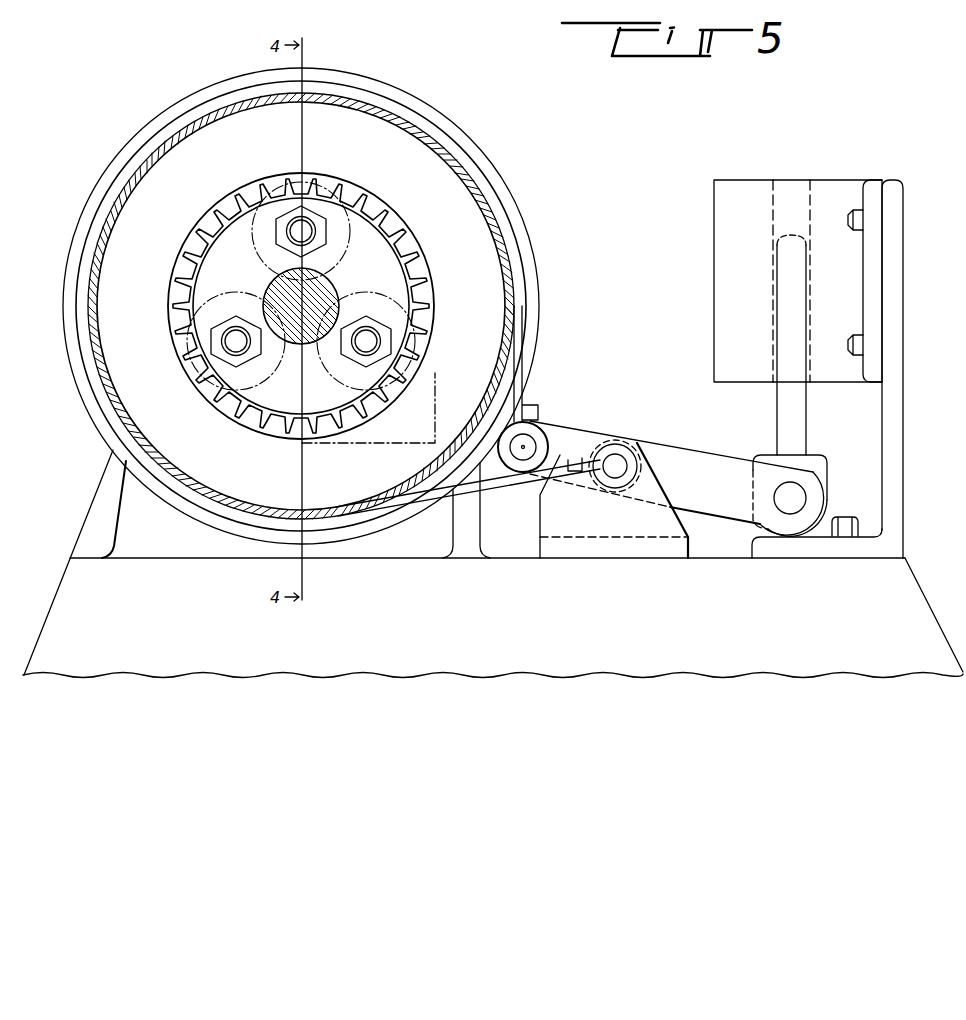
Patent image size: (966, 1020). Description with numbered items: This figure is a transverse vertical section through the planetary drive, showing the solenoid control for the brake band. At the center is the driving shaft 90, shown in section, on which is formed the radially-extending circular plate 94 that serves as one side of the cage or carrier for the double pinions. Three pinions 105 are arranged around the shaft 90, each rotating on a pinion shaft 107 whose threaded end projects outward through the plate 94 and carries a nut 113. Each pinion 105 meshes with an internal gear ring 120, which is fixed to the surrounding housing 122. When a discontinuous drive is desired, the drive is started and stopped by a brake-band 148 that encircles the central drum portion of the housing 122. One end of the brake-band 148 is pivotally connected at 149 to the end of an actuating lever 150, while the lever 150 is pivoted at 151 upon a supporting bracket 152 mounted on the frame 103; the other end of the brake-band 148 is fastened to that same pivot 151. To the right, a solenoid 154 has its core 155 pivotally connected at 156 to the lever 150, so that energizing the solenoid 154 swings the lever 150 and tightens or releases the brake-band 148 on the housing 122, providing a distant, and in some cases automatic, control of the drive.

The shaft 90 is at (340, 289).
The circular plate 94 is at (437, 279).
The frame 103 is at (465, 633).
The pinion 105 is at (305, 180).
The pinion shaft 107 is at (320, 222).
The nut 113 is at (306, 231).
The internal gear ring 120 is at (418, 244).
The housing 122 is at (448, 162).
The brake-band 148 is at (520, 363).
The pivotal connection 149 is at (528, 444).
The actuating lever 150 is at (575, 440).
The pivot 151 is at (620, 462).
The supporting bracket 152 is at (582, 523).
The solenoid 154 is at (738, 295).
The core 155 is at (793, 414).
The pivotal connection 156 is at (801, 492).